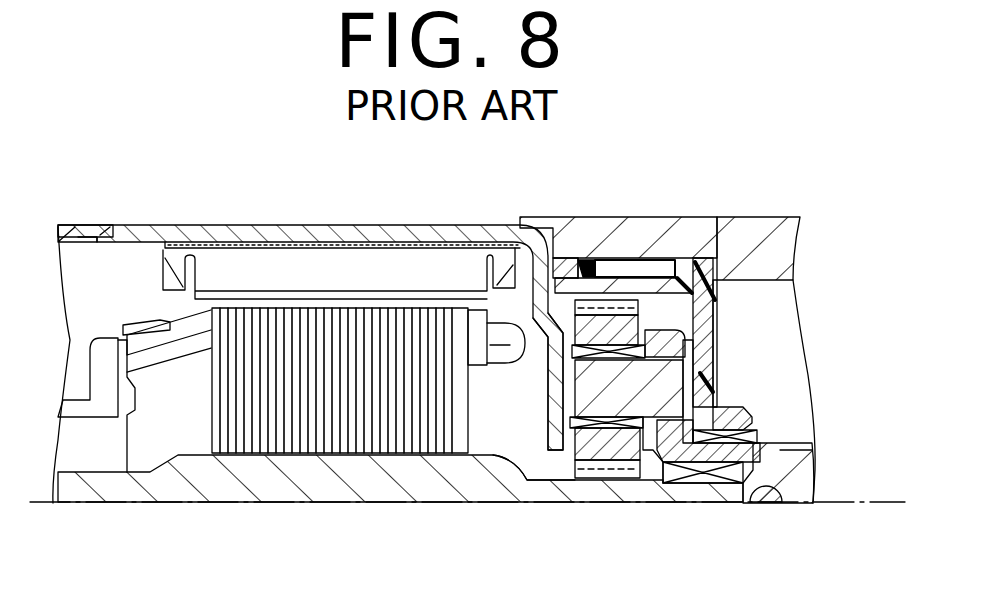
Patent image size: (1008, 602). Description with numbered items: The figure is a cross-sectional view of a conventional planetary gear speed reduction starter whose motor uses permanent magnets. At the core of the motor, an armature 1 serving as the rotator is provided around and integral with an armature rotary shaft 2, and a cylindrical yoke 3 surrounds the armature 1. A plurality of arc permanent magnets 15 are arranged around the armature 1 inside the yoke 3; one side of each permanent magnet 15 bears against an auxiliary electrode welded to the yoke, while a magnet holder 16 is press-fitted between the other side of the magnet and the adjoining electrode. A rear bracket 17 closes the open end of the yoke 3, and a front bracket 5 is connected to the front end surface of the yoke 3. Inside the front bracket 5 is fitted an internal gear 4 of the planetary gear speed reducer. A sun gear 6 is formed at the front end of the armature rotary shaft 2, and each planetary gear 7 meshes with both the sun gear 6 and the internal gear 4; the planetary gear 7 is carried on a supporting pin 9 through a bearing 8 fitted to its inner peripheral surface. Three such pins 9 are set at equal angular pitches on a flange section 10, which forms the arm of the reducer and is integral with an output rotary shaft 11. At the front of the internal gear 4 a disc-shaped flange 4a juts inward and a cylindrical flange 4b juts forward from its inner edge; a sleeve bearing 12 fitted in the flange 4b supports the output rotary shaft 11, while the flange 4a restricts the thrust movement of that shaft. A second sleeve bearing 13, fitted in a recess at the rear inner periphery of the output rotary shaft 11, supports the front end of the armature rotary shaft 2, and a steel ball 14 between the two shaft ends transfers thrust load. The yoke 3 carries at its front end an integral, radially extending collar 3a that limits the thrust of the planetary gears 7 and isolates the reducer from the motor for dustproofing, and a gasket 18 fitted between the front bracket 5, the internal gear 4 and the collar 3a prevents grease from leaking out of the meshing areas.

The armature 1 is at (325, 433).
The armature rotary shaft 2 is at (273, 487).
The yoke 3 is at (318, 225).
The collar 3a is at (545, 413).
The internal gear 4 is at (693, 247).
The flange 4a is at (713, 338).
The cylindrical flange 4b is at (720, 405).
The front bracket 5 is at (770, 232).
The sun gear 6 is at (543, 473).
The planetary gear 7 is at (598, 450).
The bearing 8 is at (625, 465).
The supporting pin 9 is at (670, 380).
The flange section 10 is at (717, 318).
The output rotary shaft 11 is at (797, 468).
The sleeve bearing 12 is at (757, 435).
The sleeve bearing 13 is at (692, 480).
The steel ball 14 is at (760, 498).
The permanent magnet 15 is at (260, 297).
The magnet holder 16 is at (425, 245).
The rear bracket 17 is at (80, 225).
The gasket 18 is at (565, 252).